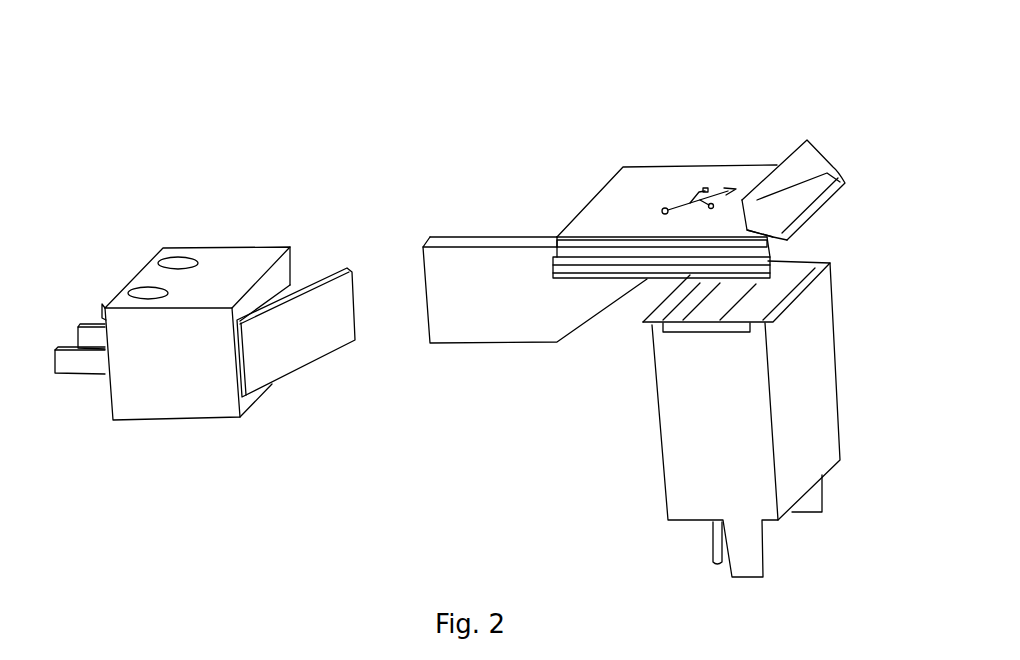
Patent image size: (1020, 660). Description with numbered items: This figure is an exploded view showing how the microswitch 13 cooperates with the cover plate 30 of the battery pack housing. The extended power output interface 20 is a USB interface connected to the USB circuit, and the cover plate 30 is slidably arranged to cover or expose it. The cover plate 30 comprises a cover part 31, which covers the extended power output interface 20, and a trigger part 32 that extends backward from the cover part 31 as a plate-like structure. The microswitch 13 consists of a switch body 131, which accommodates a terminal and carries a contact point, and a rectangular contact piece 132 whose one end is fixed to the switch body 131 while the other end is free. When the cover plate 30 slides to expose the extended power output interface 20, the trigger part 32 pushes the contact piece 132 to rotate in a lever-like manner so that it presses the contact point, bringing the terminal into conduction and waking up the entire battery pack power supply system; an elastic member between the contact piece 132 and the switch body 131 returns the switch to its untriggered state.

The microswitch 13 is at (322, 143).
The switch body 131 is at (222, 267).
The contact piece 132 is at (313, 322).
The cover plate 30 is at (477, 88).
The cover part 31 is at (740, 177).
The trigger part 32 is at (488, 280).
The extended power output interface 20 is at (792, 388).